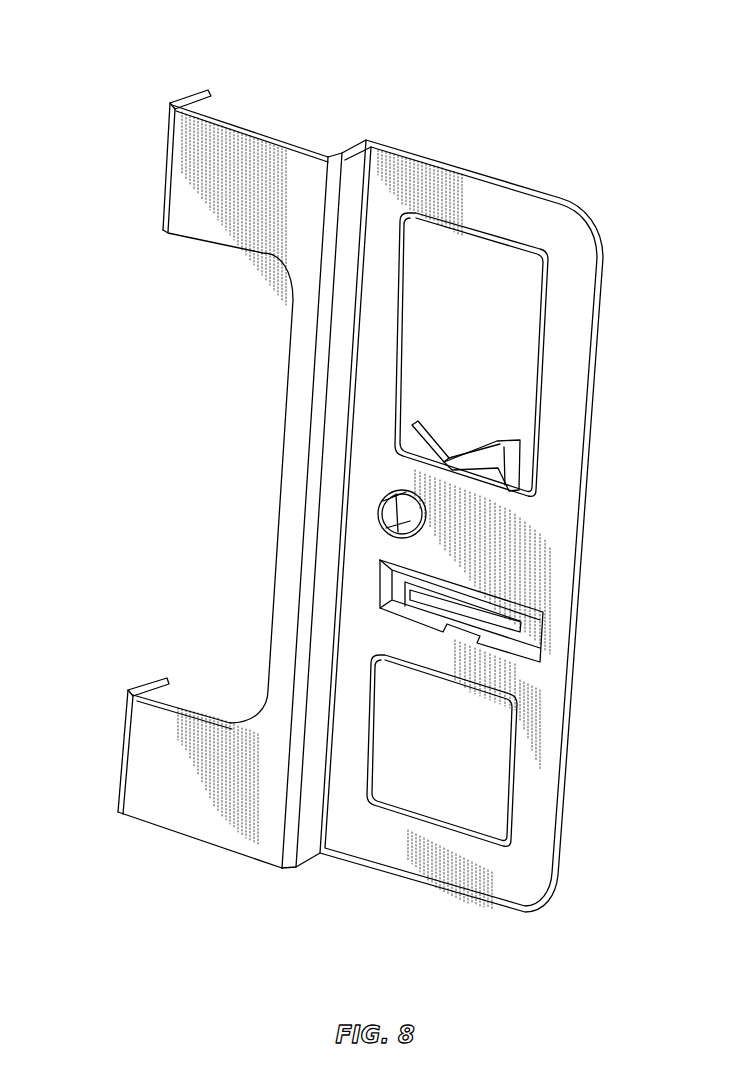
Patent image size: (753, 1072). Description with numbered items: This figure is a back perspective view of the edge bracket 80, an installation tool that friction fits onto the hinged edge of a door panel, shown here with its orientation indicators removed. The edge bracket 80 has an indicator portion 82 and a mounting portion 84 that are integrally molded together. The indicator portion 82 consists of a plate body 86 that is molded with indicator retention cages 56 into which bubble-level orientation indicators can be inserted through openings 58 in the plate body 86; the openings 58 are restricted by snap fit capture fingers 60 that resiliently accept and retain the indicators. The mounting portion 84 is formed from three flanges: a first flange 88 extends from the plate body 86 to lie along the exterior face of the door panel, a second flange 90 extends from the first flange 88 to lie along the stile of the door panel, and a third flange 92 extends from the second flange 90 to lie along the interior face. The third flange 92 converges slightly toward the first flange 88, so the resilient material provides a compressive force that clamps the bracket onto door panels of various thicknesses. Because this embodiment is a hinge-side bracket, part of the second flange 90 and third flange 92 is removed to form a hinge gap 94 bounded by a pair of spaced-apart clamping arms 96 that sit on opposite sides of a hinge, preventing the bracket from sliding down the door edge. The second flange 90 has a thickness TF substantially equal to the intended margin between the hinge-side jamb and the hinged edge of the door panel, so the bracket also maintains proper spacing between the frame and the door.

The indicator retention cage 56 is at (447, 460).
The opening 58 is at (380, 500).
The snap fit capture finger 60 is at (380, 526).
The edge bracket 80 is at (516, 947).
The indicator portion 82 is at (460, 877).
The mounting portion 84 is at (147, 752).
The plate body 86 is at (542, 700).
The first flange 88 is at (357, 173).
The second flange 90 is at (263, 163).
The third flange 92 is at (188, 93).
The hinge gap 94 is at (220, 292).
The clamping arm 96 is at (207, 180).
The thickness TF is at (225, 117).